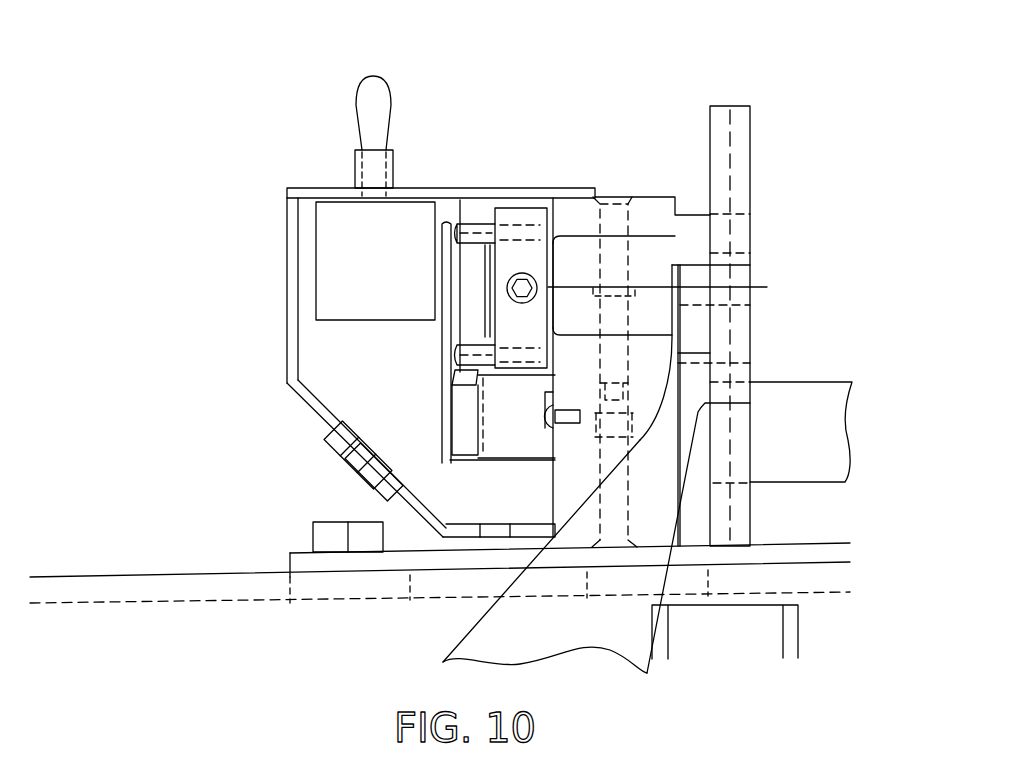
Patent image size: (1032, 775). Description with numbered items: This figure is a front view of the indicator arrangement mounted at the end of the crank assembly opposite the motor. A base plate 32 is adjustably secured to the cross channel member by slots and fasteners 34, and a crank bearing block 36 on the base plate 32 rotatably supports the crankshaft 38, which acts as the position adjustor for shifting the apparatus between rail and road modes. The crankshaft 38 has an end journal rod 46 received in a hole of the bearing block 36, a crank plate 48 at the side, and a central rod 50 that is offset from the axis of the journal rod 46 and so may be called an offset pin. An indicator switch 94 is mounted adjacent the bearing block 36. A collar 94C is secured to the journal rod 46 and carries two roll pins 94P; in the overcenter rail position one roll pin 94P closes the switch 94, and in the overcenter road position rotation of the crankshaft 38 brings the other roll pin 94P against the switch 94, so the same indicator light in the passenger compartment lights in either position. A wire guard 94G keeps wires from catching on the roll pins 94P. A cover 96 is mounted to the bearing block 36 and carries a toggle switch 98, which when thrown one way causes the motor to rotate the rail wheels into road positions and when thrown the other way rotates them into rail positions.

The base plate 32 is at (842, 545).
The fasteners 34 is at (313, 530).
The crank bearing block 36 is at (652, 195).
The crankshaft 38 is at (778, 373).
The journal rod 46 is at (648, 268).
The crank plate 48 is at (750, 128).
The crankshaft central rod 50 is at (805, 403).
The indicator switch 94 is at (462, 463).
The collar 94C is at (513, 215).
The wire guard 94G is at (435, 330).
The roll pins 94P is at (467, 337).
The cover 96 is at (287, 243).
The toggle switch 98 is at (370, 78).